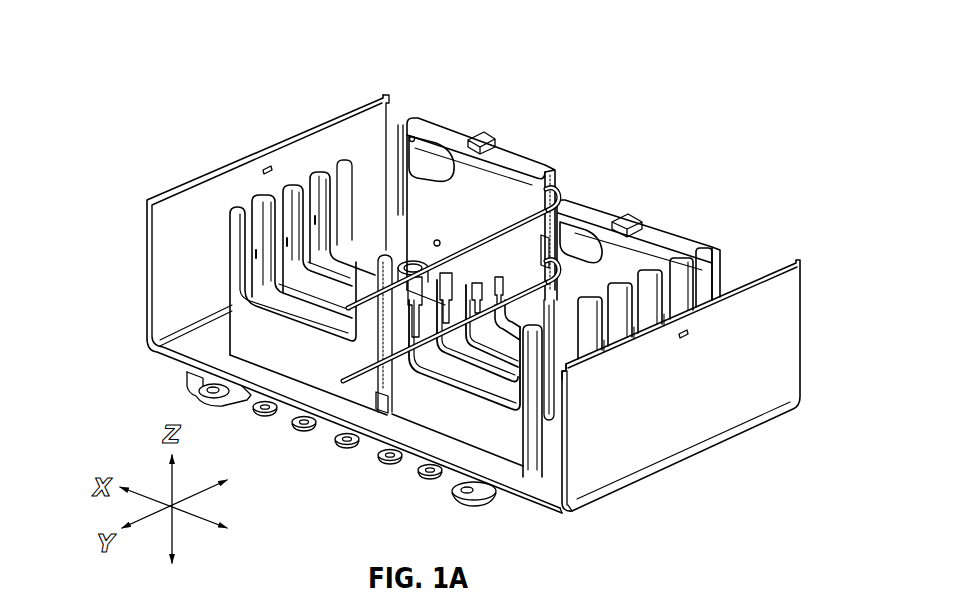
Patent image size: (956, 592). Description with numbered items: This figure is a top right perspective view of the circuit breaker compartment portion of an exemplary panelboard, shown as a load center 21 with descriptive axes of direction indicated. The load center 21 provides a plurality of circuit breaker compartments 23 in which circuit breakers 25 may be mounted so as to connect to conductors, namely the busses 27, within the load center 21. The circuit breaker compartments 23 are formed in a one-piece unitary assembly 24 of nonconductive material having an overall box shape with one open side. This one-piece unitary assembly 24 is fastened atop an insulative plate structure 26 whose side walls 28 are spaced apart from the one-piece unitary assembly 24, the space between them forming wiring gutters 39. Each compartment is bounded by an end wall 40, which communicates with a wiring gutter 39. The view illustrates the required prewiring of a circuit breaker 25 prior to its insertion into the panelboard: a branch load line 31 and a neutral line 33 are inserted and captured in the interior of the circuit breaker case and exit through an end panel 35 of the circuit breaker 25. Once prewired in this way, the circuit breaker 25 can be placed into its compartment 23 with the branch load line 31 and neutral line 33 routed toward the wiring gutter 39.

The load center 21 is at (384, 76).
The circuit breaker compartments 23 is at (256, 252).
The one-piece unitary assembly 24 is at (302, 361).
The circuit breaker 25 is at (492, 219).
The insulative plate structure 26 is at (548, 512).
The busses 27 is at (420, 484).
The side walls 28 is at (681, 398).
The branch load line 31 is at (349, 311).
The neutral line 33 is at (344, 385).
The end panel 35 is at (558, 176).
The wiring gutters 39 is at (185, 304).
The end wall 40 is at (568, 352).